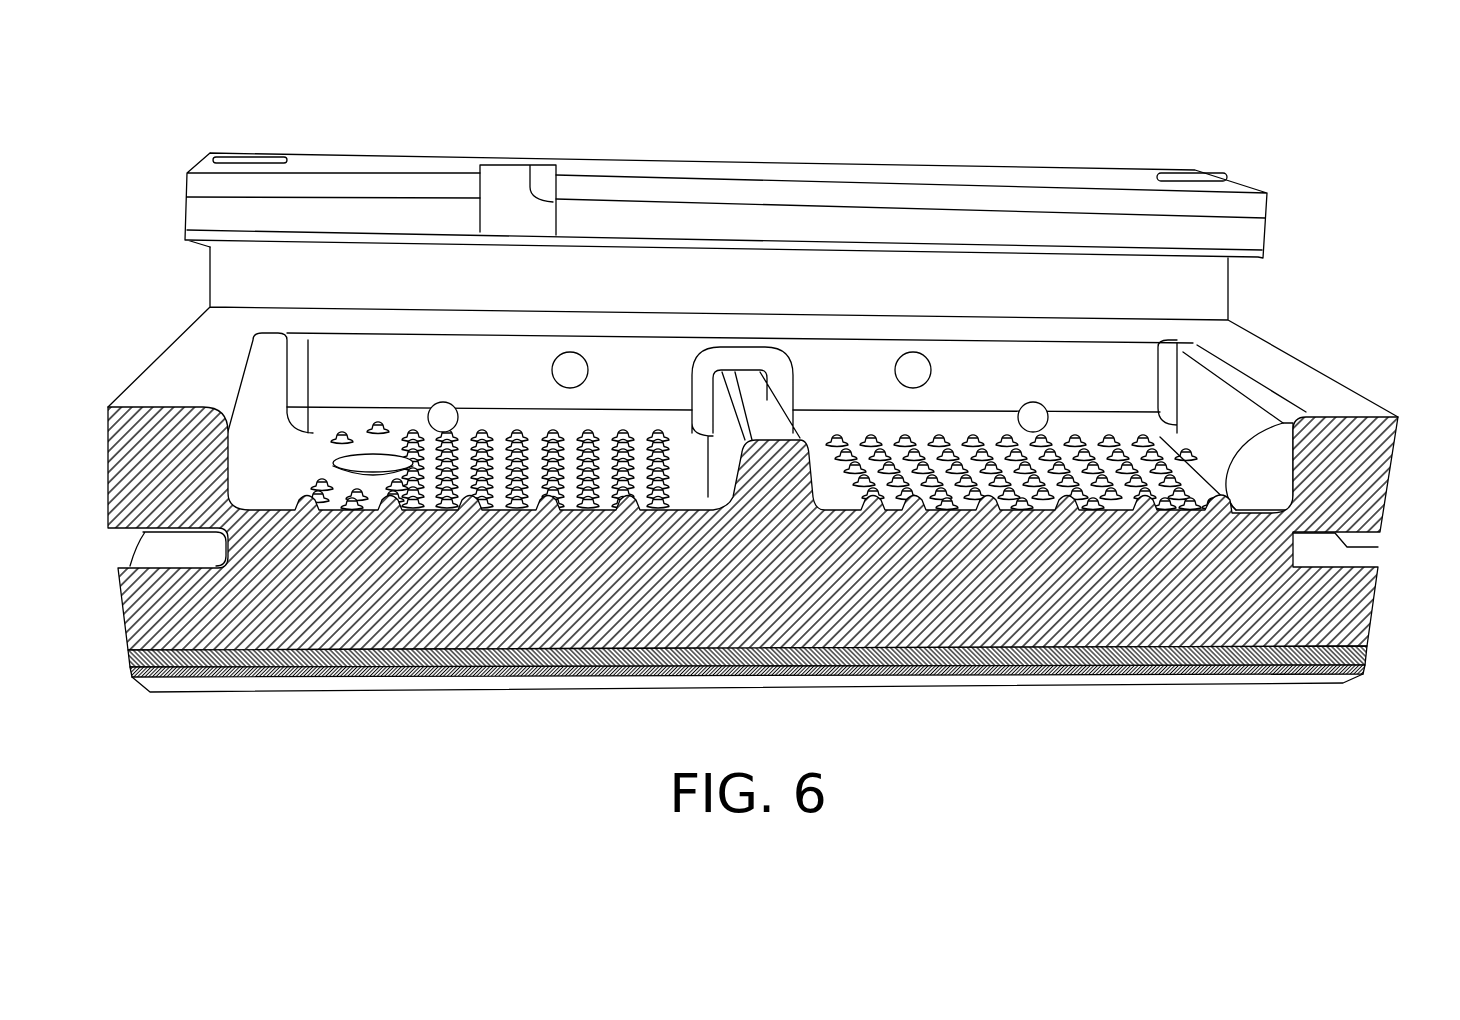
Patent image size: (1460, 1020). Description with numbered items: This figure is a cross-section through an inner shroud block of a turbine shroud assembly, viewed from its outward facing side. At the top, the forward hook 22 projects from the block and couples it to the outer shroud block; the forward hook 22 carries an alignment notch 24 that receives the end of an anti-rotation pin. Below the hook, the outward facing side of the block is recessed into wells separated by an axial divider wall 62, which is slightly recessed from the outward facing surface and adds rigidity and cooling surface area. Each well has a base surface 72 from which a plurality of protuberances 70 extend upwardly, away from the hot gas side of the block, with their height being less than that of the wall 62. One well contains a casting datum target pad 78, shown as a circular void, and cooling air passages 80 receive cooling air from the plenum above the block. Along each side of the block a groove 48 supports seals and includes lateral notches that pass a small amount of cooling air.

The forward hook 22 is at (1257, 232).
The alignment notch 24 is at (532, 166).
The groove 48 is at (1377, 534).
The axial divider wall 62 is at (748, 380).
The protuberances 70 is at (1214, 508).
The base surface 72 is at (1233, 482).
The casting datum target pad 78 is at (358, 462).
The cooling air passages 80 is at (1033, 402).